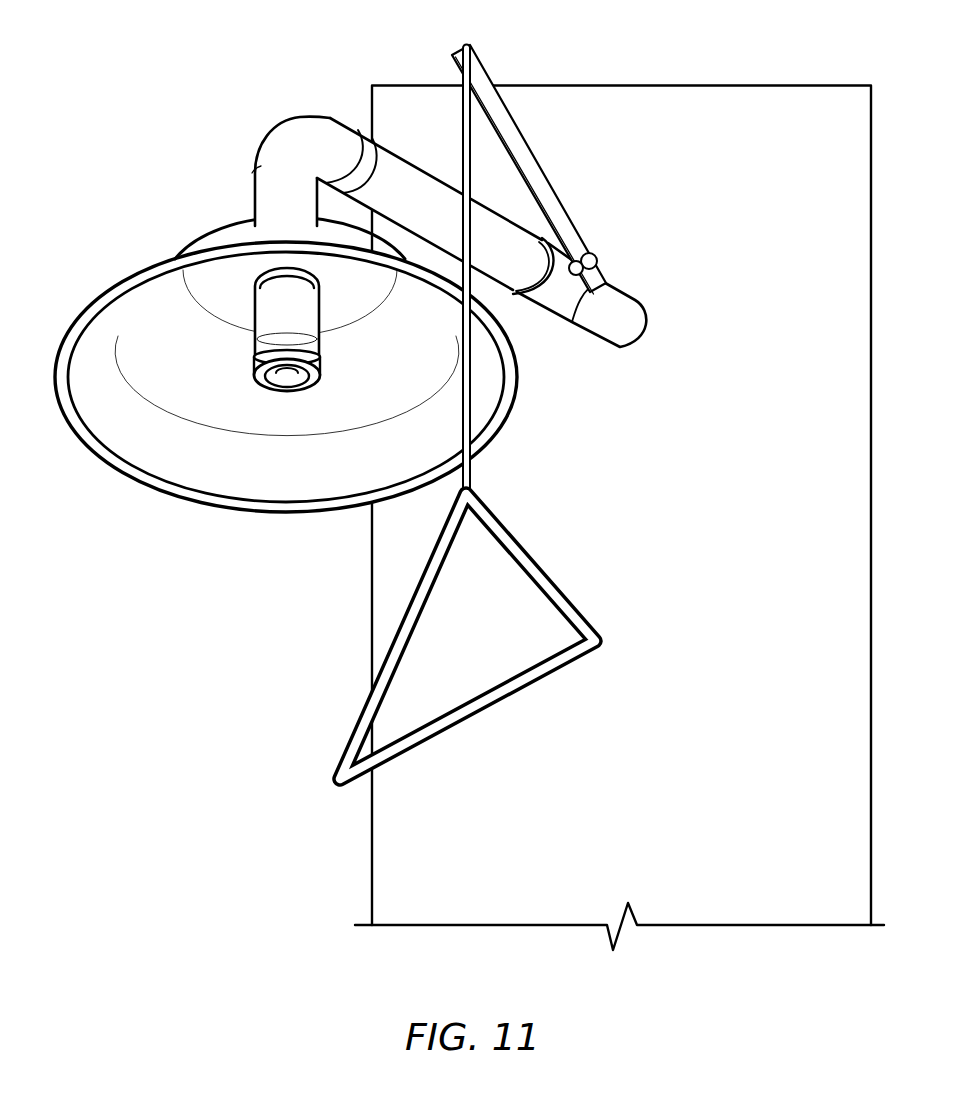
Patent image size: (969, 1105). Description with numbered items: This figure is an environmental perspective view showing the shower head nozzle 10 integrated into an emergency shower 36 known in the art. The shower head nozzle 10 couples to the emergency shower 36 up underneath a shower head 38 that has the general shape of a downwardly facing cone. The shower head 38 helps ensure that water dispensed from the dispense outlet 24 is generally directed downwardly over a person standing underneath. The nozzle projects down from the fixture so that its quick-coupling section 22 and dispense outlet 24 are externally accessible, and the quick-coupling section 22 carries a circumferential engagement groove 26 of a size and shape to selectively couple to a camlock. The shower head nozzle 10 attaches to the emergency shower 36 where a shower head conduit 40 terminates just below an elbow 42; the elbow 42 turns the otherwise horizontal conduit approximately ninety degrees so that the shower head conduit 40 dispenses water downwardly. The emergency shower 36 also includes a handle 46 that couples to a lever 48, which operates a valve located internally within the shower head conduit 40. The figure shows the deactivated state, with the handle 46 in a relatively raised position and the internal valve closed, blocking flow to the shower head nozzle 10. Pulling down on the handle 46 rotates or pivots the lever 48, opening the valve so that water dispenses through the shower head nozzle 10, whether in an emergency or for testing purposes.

The shower head nozzle 10 is at (188, 462).
The quick-coupling section 22 is at (218, 420).
The dispense outlet 24 is at (284, 395).
The engagement groove 26 is at (257, 352).
The emergency shower 36 is at (251, 116).
The shower head 38 is at (148, 268).
The shower head conduit 40 is at (395, 176).
The elbow 42 is at (304, 130).
The handle 46 is at (533, 562).
The lever 48 is at (496, 105).